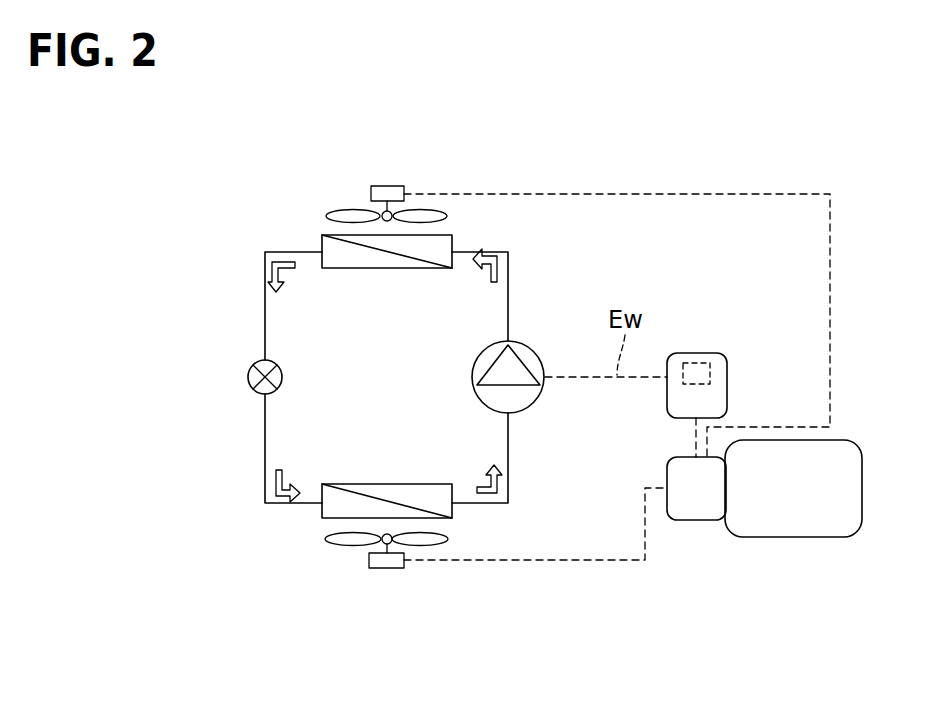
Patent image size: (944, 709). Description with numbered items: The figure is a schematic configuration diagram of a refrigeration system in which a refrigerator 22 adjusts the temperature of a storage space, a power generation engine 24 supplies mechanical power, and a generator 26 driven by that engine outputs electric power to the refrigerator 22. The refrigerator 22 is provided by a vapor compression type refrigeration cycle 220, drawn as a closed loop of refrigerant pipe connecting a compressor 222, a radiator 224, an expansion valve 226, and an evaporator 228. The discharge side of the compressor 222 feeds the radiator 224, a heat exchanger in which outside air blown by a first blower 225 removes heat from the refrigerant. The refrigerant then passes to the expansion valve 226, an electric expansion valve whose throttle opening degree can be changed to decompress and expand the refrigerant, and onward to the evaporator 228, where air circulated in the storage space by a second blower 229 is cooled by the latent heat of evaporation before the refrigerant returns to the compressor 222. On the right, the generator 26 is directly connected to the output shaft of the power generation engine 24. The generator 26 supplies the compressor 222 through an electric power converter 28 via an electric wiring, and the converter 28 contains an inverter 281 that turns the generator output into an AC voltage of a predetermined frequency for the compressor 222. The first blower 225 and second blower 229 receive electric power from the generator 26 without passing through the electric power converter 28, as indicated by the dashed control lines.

The refrigerator 22 is at (366, 374).
The refrigeration cycle 220 is at (275, 246).
The compressor 222 is at (531, 348).
The radiator 224 is at (455, 243).
The first blower 225 is at (384, 185).
The expansion valve 226 is at (248, 377).
The evaporator 228 is at (322, 512).
The second blower 229 is at (387, 568).
The electric power converter 28 is at (742, 375).
The inverter 281 is at (720, 370).
The generator 26 is at (695, 521).
The power generation engine 24 is at (781, 538).